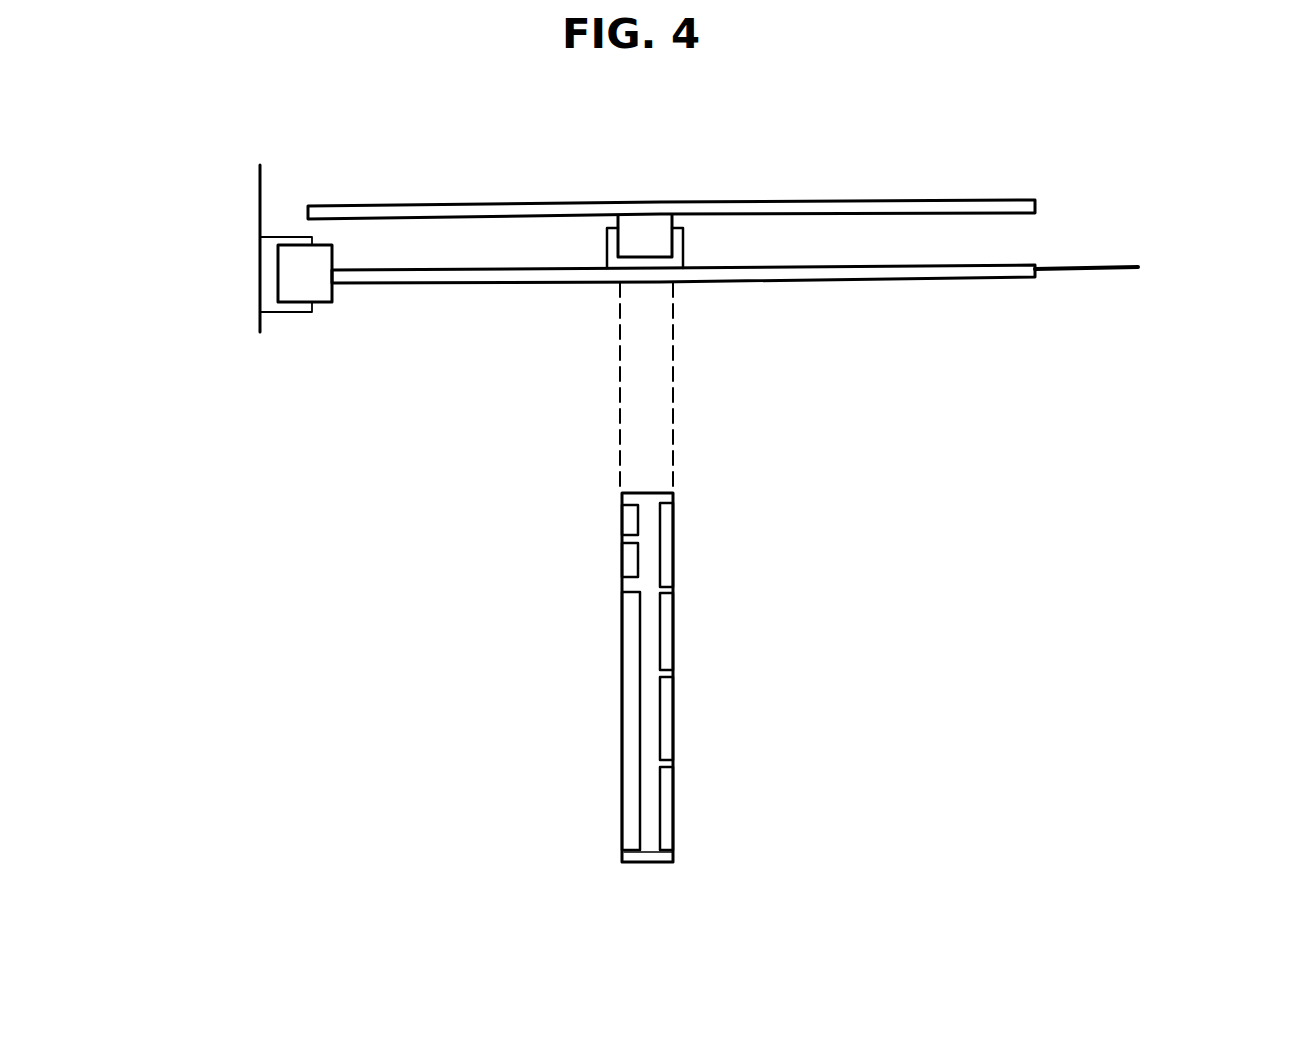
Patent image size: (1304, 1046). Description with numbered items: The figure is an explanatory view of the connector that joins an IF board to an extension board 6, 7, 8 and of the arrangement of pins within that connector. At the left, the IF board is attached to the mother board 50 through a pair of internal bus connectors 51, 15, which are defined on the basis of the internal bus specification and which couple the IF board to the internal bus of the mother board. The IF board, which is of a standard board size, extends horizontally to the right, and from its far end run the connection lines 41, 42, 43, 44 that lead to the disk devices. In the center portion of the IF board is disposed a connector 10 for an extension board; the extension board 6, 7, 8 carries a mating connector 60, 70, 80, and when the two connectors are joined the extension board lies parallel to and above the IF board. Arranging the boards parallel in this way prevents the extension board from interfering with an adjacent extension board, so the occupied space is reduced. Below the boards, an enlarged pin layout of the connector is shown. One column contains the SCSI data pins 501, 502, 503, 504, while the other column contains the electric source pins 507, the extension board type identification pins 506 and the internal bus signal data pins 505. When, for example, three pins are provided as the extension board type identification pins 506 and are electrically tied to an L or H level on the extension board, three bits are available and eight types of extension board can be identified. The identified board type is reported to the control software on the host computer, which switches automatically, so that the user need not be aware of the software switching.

The mother board 50 is at (262, 184).
The internal bus connector 51 is at (272, 313).
The internal bus connector 15 is at (311, 283).
The extension board 6 is at (716, 171).
The extension board 7 is at (716, 171).
The extension board 8 is at (845, 200).
The connector for an extension board 10 is at (676, 262).
The connection line 41 is at (1162, 283).
The connection line 42 is at (1162, 283).
The connection line 43 is at (1162, 283).
The connection line 44 is at (1095, 301).
The connector 60 is at (662, 315).
The connector 70 is at (662, 315).
The connector 80 is at (640, 218).
The electric source pin 507 is at (622, 520).
The extension board type identification pin 506 is at (622, 562).
The internal bus signal data pin 505 is at (625, 782).
The SCSI data pin 501 is at (675, 555).
The SCSI data pin 502 is at (670, 640).
The SCSI data pin 503 is at (670, 722).
The SCSI data pin 504 is at (673, 803).